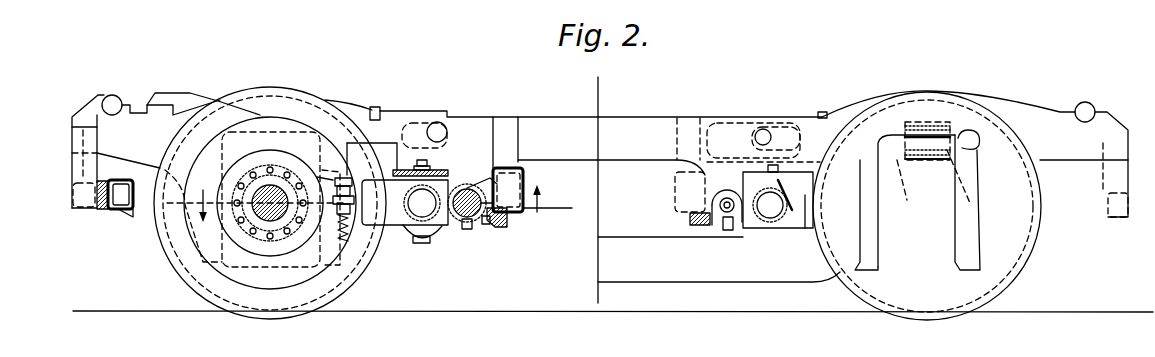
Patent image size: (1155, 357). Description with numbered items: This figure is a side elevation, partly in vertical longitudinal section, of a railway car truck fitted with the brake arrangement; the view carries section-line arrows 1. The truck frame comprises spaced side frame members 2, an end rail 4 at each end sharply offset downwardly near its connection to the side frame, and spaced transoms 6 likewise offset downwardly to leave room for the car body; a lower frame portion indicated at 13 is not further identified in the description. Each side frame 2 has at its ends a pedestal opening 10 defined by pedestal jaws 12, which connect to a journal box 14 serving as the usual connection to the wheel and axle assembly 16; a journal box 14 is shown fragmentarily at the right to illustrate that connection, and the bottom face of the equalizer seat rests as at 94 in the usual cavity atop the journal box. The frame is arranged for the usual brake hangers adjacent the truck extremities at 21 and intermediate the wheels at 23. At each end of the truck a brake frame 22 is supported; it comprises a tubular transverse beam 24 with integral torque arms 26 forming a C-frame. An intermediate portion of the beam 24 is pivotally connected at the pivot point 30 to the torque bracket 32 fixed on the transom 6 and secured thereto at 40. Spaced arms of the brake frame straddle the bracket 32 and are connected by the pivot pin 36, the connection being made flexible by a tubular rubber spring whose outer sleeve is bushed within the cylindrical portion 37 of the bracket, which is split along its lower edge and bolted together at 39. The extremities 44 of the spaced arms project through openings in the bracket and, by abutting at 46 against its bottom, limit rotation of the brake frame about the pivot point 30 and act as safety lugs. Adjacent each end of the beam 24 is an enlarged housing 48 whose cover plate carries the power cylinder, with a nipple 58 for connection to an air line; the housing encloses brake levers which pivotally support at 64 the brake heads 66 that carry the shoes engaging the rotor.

The direction arrow 1 is at (366, 203).
The side frame member 2 is at (625, 128).
The end rail 4 is at (74, 197).
The transom 6 is at (515, 170).
The pedestal opening 10 is at (966, 147).
The pedestal jaw 12 is at (980, 237).
The lower frame member 13 is at (615, 244).
The journal box 14 is at (960, 178).
The wheel and axle assembly 16 is at (172, 240).
The brake hanger location 21 is at (112, 95).
The brake frame 22 is at (400, 236).
The brake hanger location 23 is at (441, 124).
The transverse beam 24 is at (424, 228).
The torque arm 26 is at (803, 230).
The pivot point 30 is at (727, 198).
The torque bracket 32 is at (466, 190).
The pivot pin 36 is at (466, 219).
The cylindrical portion 37 is at (470, 230).
The bolts 39 is at (485, 225).
The securing means 40 is at (507, 205).
The arm extremities 44 is at (500, 226).
The abutment 46 is at (500, 228).
The housing 48 is at (432, 245).
The nipple 58 is at (421, 158).
The brake head pivot 64 is at (332, 178).
The brake head 66 is at (328, 232).
The seat 94 is at (930, 165).